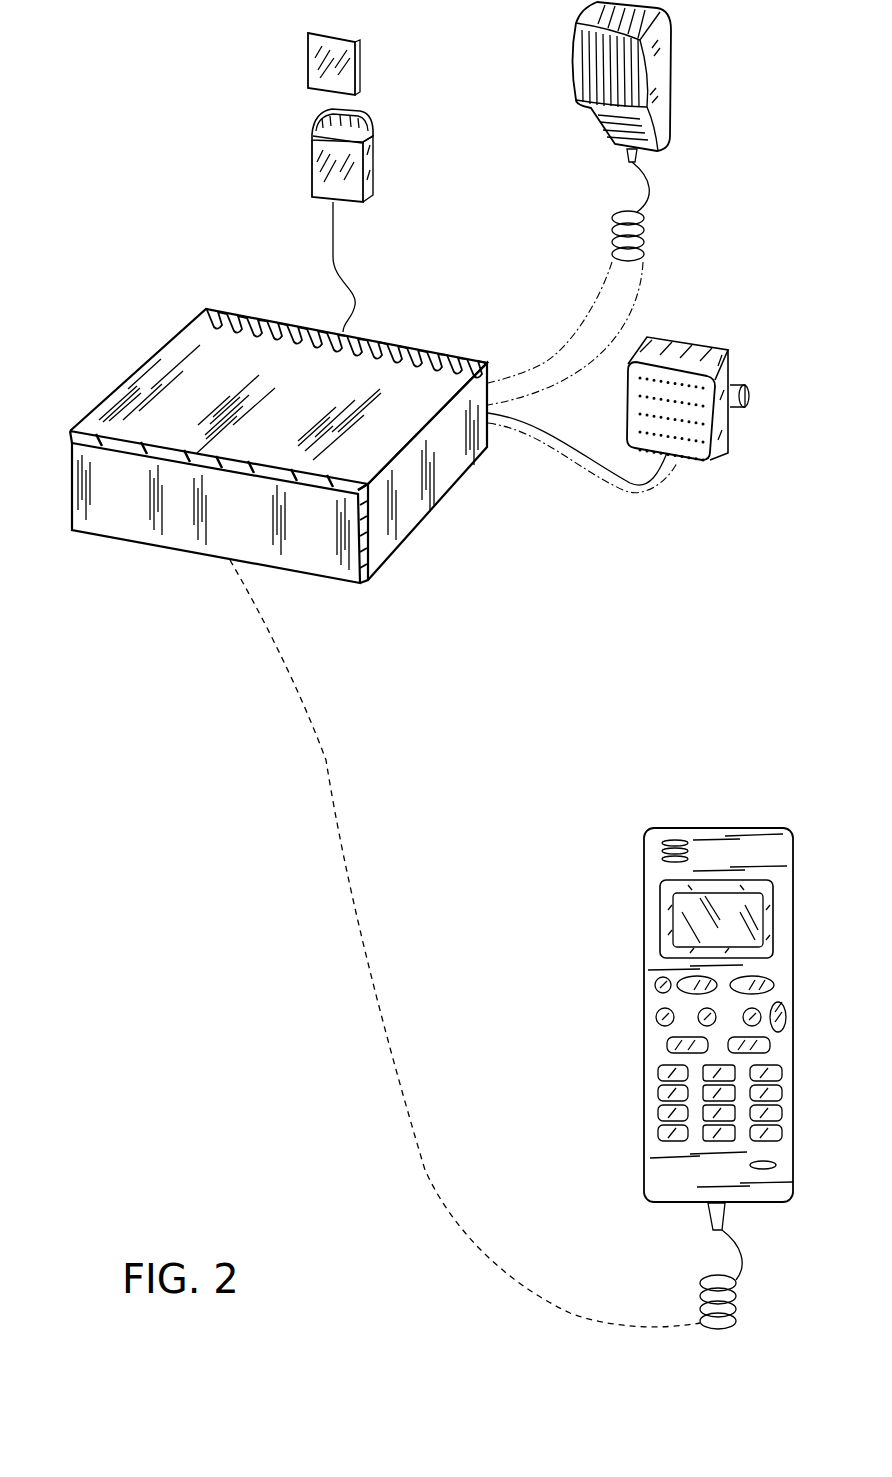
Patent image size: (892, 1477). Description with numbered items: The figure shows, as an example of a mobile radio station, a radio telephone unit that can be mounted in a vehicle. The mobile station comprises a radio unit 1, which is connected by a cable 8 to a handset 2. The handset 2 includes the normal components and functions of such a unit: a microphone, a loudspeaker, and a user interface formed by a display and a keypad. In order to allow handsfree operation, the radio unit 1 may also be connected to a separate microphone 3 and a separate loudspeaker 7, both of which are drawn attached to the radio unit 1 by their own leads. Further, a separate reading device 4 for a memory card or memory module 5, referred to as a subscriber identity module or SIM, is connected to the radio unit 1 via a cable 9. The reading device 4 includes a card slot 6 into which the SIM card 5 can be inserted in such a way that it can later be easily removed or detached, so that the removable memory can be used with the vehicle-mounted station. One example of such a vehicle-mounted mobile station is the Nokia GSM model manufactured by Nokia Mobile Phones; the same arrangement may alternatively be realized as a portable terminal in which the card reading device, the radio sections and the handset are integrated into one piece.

The radio unit 1 is at (158, 359).
The handset 2 is at (643, 862).
The separate microphone 3 is at (672, 67).
The reading device 4 is at (373, 170).
The SIM card 5 is at (360, 60).
The card slot 6 is at (373, 120).
The separate loudspeaker 7 is at (733, 357).
The cable 8 is at (308, 710).
The cable 9 is at (335, 240).